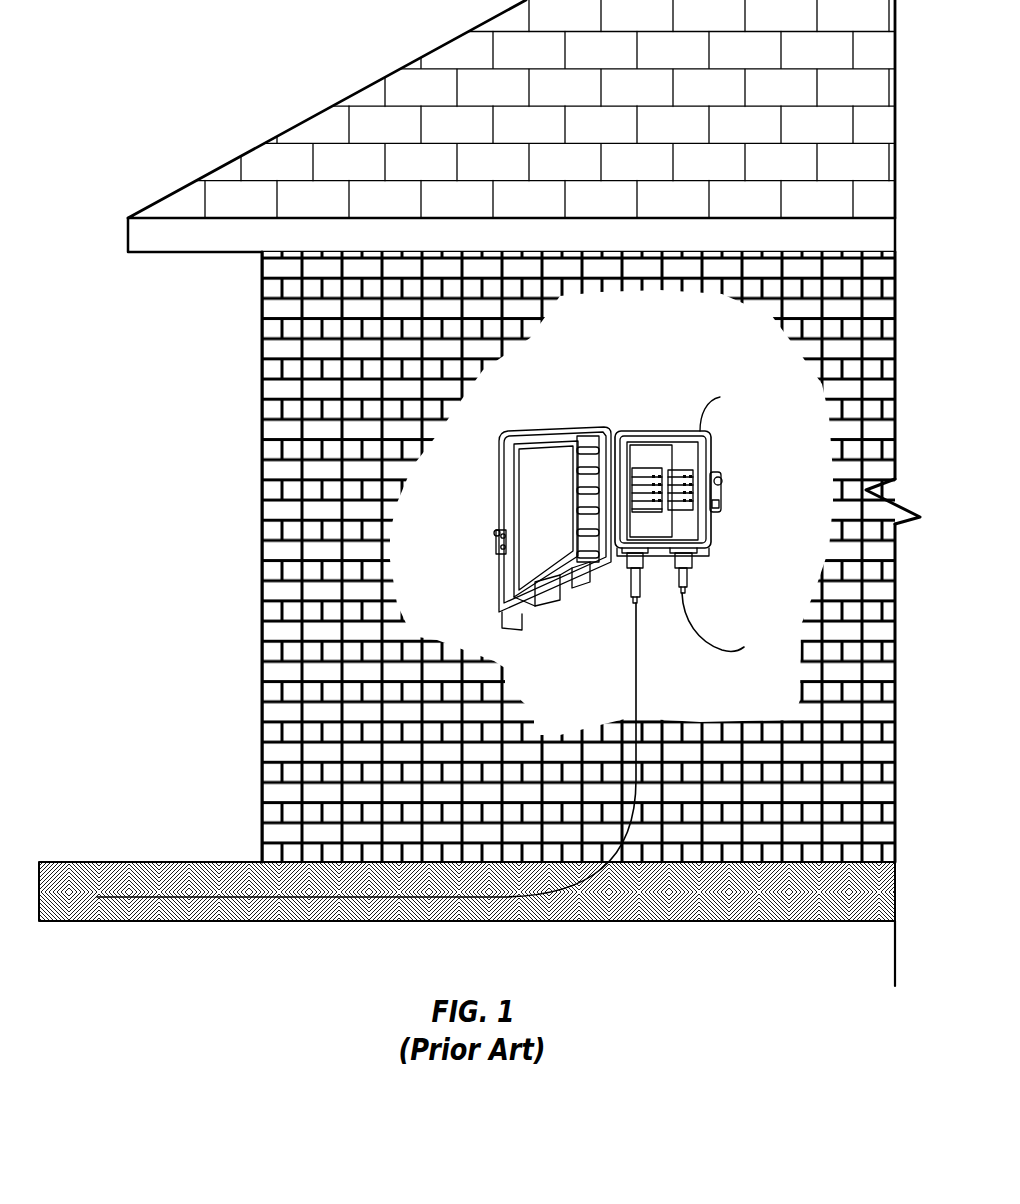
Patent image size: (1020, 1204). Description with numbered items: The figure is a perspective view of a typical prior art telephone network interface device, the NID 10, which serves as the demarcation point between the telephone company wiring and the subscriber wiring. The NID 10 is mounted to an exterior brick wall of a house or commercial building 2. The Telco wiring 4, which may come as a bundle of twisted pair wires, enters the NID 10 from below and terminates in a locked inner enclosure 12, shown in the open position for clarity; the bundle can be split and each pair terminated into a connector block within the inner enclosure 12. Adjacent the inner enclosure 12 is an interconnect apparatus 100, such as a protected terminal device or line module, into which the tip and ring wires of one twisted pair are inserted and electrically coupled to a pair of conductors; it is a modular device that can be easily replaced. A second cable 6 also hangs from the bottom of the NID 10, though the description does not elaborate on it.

The house or commercial building 2 is at (260, 423).
The Telco wiring 4 is at (635, 635).
The drop cable 6 is at (692, 615).
The network interface device 10 is at (664, 392).
The inner enclosure 12 is at (652, 452).
The interconnect apparatus 100 is at (695, 482).